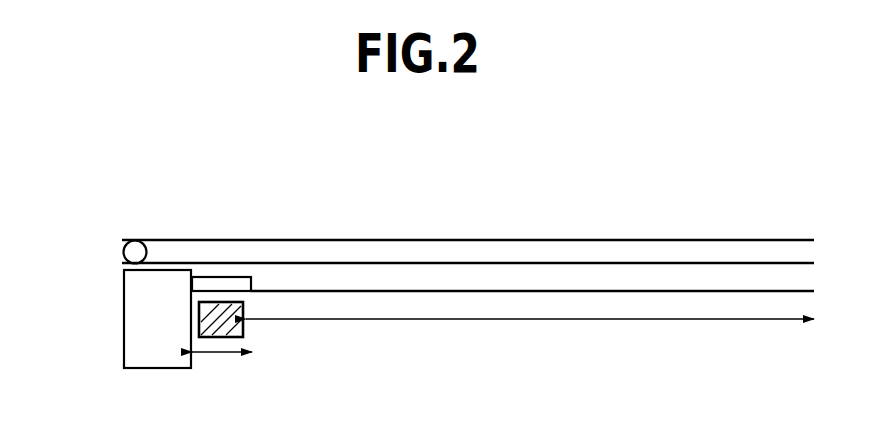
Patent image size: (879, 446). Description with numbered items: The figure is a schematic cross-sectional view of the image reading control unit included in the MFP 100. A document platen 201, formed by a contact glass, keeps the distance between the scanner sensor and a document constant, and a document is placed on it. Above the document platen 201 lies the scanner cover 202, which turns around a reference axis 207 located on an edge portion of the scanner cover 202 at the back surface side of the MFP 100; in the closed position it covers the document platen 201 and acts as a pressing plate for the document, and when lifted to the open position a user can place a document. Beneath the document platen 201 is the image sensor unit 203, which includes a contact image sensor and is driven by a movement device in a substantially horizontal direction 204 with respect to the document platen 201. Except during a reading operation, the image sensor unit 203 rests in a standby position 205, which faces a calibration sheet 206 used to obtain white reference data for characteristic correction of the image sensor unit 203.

The MFP 100 is at (124, 346).
The document platen 201 is at (383, 290).
The scanner cover 202 is at (535, 240).
The image sensor unit 203 is at (244, 331).
The direction 204 is at (552, 321).
The standby position 205 is at (221, 355).
The calibration sheet 206 is at (222, 277).
The reference axis 207 is at (124, 252).